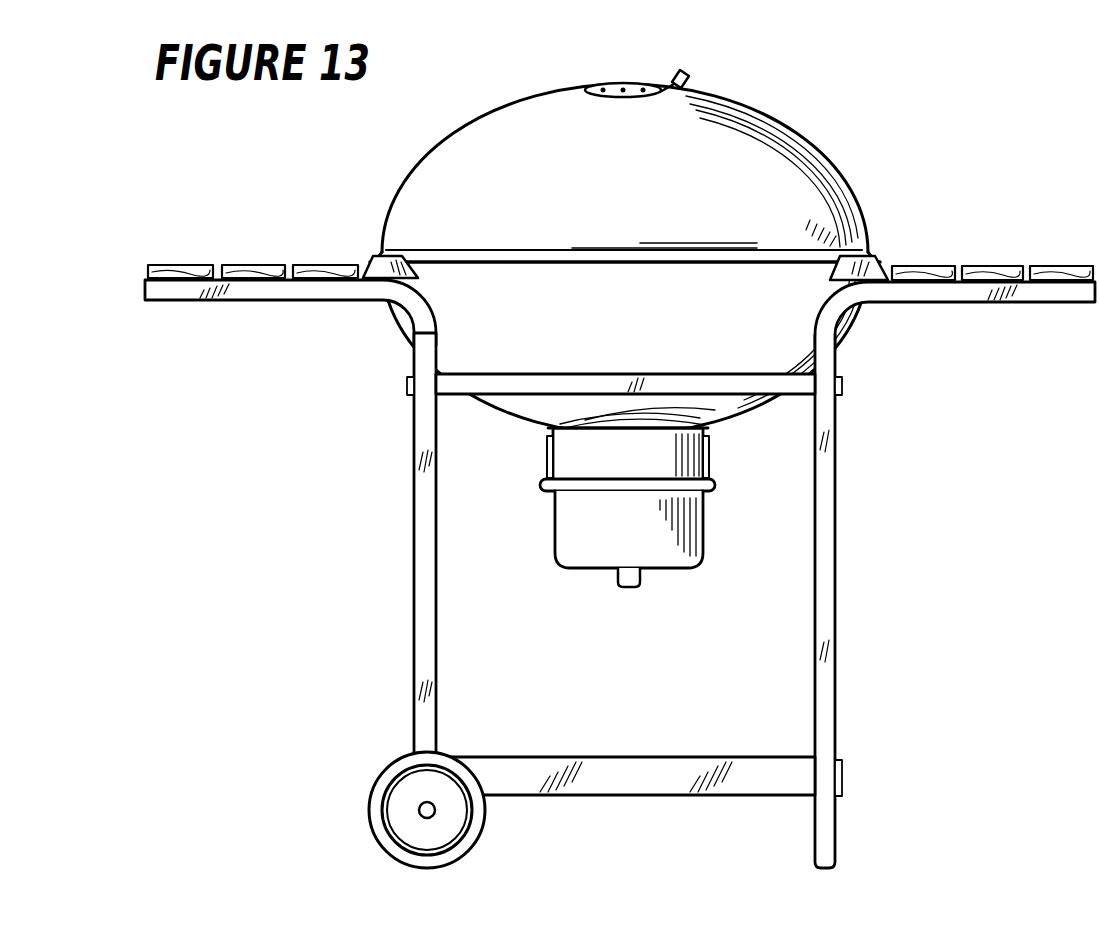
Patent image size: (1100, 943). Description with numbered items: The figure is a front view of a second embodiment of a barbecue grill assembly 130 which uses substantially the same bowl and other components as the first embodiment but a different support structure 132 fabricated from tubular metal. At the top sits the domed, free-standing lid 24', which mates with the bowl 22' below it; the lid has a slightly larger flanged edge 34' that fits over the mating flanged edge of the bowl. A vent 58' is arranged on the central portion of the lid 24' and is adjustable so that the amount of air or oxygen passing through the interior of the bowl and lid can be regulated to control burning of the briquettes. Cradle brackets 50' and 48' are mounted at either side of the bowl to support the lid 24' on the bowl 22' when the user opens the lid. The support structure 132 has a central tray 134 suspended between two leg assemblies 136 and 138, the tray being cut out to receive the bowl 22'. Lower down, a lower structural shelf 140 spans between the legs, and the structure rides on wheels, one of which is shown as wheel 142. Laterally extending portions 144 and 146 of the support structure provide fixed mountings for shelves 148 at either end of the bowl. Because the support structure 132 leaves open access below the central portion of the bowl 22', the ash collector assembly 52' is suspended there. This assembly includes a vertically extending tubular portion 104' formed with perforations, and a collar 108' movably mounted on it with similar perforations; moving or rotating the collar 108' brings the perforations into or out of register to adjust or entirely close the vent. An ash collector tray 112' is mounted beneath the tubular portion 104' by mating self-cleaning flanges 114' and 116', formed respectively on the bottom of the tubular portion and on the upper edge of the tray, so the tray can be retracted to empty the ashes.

The barbecue grill assembly 130 is at (880, 134).
The lid 24' is at (625, 150).
The bowl 22' is at (625, 348).
The vent 58' is at (654, 68).
The flanged edge of the lid 34' is at (594, 228).
The cradle bracket 50' is at (356, 227).
The cradle bracket 48' is at (898, 242).
The support structure 132 is at (410, 576).
The central tray 134 is at (425, 386).
The leg assembly 136 is at (414, 545).
The leg assembly 138 is at (836, 546).
The lower structural shelf 140 is at (627, 770).
The wheel 142 is at (388, 783).
The laterally extending portion 144 is at (222, 303).
The laterally extending portion 146 is at (966, 304).
The shelves 148 is at (256, 265).
The ash collector assembly 52' is at (626, 509).
The vertically extending tubular portion 104' is at (628, 454).
The collar 108' is at (674, 449).
The ash collector tray 112' is at (629, 539).
The self-cleaning flange 114' is at (675, 474).
The self-cleaning flange 116' is at (491, 512).